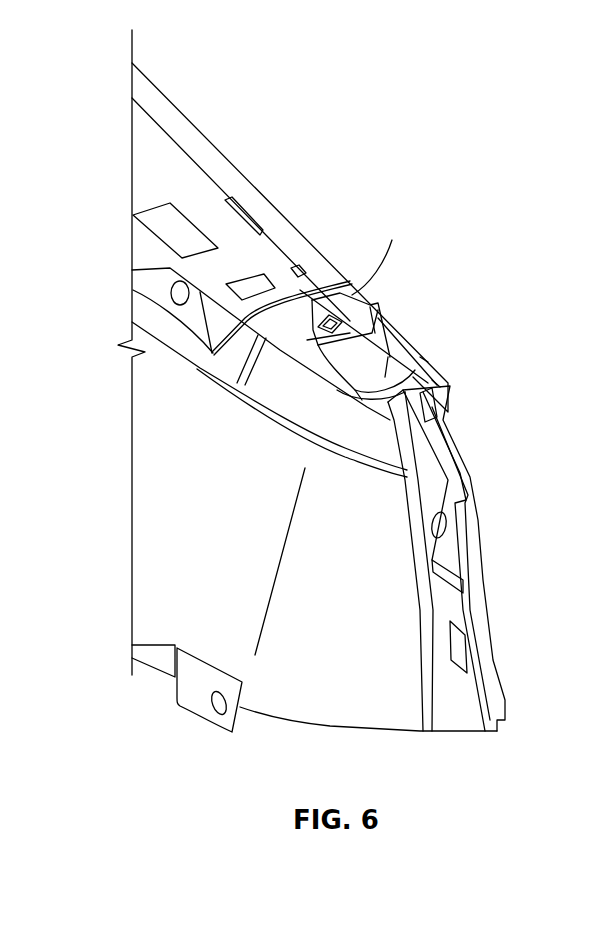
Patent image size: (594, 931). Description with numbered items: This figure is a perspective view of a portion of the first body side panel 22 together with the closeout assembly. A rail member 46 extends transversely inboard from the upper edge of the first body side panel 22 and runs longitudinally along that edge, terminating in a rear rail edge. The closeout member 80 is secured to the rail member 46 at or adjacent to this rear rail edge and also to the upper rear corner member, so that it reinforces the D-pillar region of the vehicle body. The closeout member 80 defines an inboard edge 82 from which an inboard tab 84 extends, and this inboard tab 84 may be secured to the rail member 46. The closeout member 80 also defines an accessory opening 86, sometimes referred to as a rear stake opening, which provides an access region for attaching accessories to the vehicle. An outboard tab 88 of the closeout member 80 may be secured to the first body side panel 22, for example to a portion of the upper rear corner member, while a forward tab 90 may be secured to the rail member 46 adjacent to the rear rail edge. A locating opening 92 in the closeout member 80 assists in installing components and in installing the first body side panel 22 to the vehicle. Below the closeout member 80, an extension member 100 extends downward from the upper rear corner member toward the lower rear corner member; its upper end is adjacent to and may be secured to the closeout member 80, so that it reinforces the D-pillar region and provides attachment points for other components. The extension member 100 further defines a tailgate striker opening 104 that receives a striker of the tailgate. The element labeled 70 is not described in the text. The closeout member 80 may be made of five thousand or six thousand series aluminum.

The first body side panel 22 is at (333, 690).
The rail member 46 is at (202, 130).
The pillar 70 is at (472, 532).
The closeout member 80 is at (312, 300).
The inboard edge 82 is at (423, 357).
The inboard tab 84 is at (435, 382).
The accessory opening 86 is at (388, 357).
The outboard tab 88 is at (235, 357).
The forward tab 90 is at (267, 313).
The locating opening 92 is at (330, 320).
The extension member 100 is at (445, 595).
The tailgate striker opening 104 is at (468, 657).